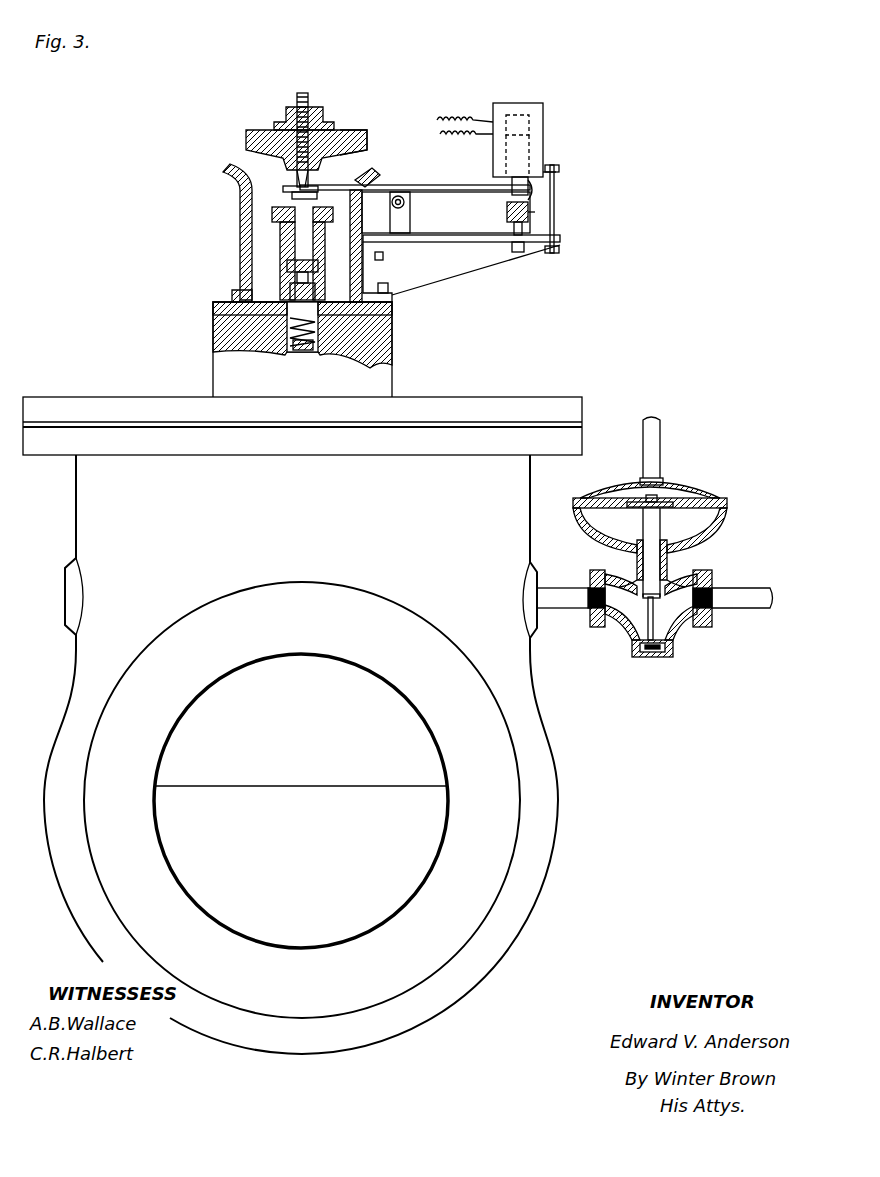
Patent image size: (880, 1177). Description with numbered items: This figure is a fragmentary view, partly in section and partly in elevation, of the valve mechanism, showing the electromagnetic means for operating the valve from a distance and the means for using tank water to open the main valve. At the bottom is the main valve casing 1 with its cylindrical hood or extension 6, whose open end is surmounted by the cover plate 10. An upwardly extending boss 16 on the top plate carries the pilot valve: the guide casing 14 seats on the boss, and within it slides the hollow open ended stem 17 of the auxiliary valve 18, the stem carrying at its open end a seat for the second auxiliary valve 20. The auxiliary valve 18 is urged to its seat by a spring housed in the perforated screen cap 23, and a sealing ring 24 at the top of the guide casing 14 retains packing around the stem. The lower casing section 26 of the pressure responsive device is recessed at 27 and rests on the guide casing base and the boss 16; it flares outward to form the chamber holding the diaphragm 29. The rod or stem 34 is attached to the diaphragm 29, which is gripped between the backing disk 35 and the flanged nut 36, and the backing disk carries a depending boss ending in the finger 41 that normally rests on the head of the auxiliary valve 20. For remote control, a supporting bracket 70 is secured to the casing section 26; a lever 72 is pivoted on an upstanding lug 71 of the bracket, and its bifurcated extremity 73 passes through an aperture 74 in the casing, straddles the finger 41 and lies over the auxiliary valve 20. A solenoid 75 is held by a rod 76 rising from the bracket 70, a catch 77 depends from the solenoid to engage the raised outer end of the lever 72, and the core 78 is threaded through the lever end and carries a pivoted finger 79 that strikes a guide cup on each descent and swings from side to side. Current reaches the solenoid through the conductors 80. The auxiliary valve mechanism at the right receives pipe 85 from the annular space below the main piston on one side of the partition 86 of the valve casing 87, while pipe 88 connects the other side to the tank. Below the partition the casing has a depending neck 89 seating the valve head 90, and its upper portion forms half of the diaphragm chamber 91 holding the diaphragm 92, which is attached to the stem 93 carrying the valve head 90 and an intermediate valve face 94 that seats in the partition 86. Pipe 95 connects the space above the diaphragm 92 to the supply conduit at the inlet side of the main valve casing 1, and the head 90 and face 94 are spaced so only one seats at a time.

The main valve casing 1 is at (97, 635).
The cylindrical hood or extension 6 is at (88, 493).
The cover plate 10 is at (110, 407).
The guide casing 14 is at (321, 246).
The boss 16 is at (392, 332).
The hollow open ended stem 17 is at (280, 250).
The auxiliary valve 18 is at (290, 287).
The second auxiliary valve 20 is at (283, 190).
The perforated screen cap 23 is at (290, 330).
The sealing ring 24 is at (272, 214).
The lower casing section 26 is at (240, 233).
The recess 27 is at (290, 301).
The diaphragm 29 is at (352, 130).
The rod or stem 34 is at (300, 100).
The backing disk 35 is at (247, 140).
The flanged nut 36 is at (288, 112).
The finger 41 is at (310, 190).
The supporting bracket 70 is at (435, 243).
The upstanding lug 71 is at (403, 215).
The lever 72 is at (420, 188).
The bifurcated extremity 73 is at (297, 180).
The aperture 74 is at (368, 172).
The solenoid 75 is at (535, 140).
The rod 76 is at (555, 200).
The catch 77 is at (535, 186).
The core 78 is at (530, 158).
The pivoted finger 79 is at (530, 215).
The conductor 80 is at (462, 118).
The pipe 85 is at (558, 595).
The partition 86 is at (625, 578).
The valve casing 87 is at (612, 622).
The pipe 88 is at (745, 590).
The depending neck 89 is at (672, 646).
The valve head 90 is at (645, 652).
The diaphragm chamber 91 is at (727, 512).
The diaphragm 92 is at (690, 500).
The stem 93 is at (655, 540).
The valve face 94 is at (642, 600).
The pipe 95 is at (645, 445).